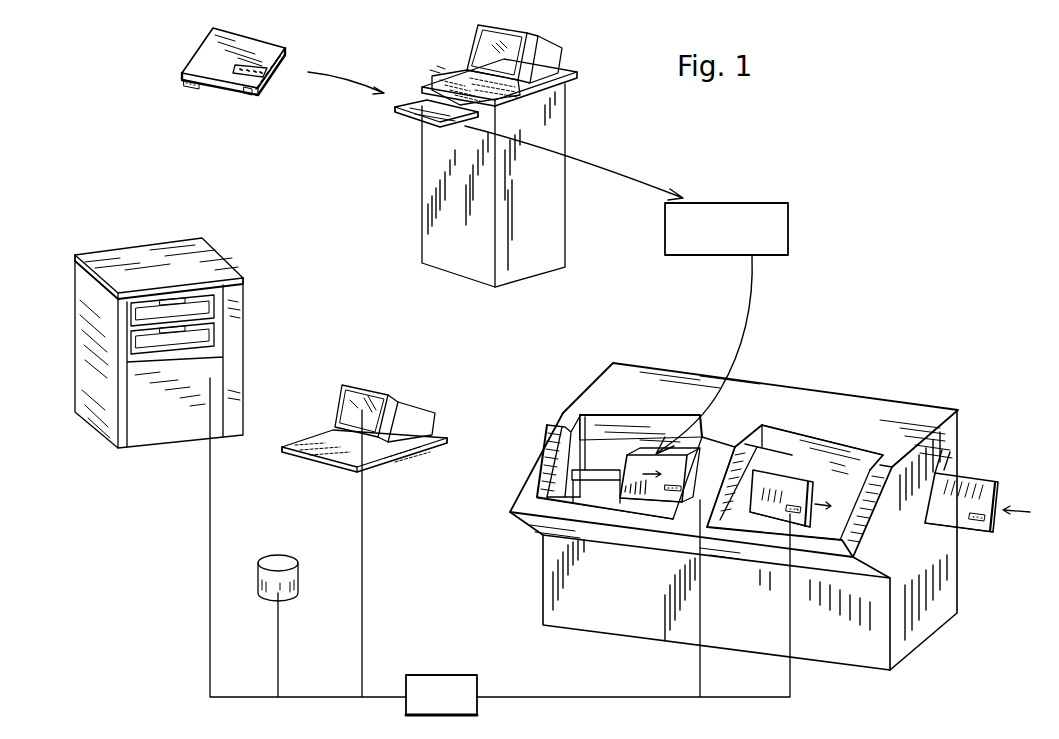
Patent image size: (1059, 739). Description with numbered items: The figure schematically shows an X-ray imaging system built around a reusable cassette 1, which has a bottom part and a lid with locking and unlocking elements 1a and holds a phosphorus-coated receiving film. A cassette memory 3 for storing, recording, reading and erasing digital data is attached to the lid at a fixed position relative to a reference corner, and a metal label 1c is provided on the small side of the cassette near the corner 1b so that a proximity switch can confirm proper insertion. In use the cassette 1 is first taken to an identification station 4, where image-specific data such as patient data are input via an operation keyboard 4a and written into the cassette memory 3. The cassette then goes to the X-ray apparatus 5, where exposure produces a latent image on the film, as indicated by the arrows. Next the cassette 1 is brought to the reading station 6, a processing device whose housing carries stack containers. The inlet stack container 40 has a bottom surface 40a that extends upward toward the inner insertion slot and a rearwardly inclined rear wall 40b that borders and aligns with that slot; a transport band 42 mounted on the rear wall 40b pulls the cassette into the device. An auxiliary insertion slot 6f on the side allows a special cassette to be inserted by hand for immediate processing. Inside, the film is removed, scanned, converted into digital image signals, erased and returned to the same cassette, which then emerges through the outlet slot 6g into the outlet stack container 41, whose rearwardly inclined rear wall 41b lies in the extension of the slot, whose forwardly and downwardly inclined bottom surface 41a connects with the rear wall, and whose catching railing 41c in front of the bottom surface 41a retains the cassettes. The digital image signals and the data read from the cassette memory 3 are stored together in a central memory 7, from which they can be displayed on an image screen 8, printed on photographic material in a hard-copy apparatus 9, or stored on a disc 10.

The cassette 1 is at (250, 45).
The locking and unlocking elements 1a is at (667, 502).
The cassette corner 1b is at (259, 96).
The metal label 1c is at (245, 90).
The cassette memory 3 is at (235, 72).
The identification station 4 is at (565, 128).
The operation keyboard 4a is at (440, 80).
The X-ray apparatus 5 is at (784, 203).
The reading station 6 is at (790, 395).
The auxiliary insertion slot 6f is at (942, 462).
The outlet slot 6g is at (757, 444).
The central memory 7 is at (444, 680).
The image screen 8 is at (412, 420).
The hard-copy apparatus 9 is at (245, 346).
The disc 10 is at (286, 556).
The inlet stack container 40 is at (578, 446).
The bottom surface 40a is at (615, 508).
The rear wall 40b is at (597, 427).
The outlet stack container 41 is at (850, 450).
The bottom surface 41a is at (825, 537).
The rear wall 41b is at (803, 440).
The catching railing 41c is at (810, 540).
The transport band 42 is at (590, 470).